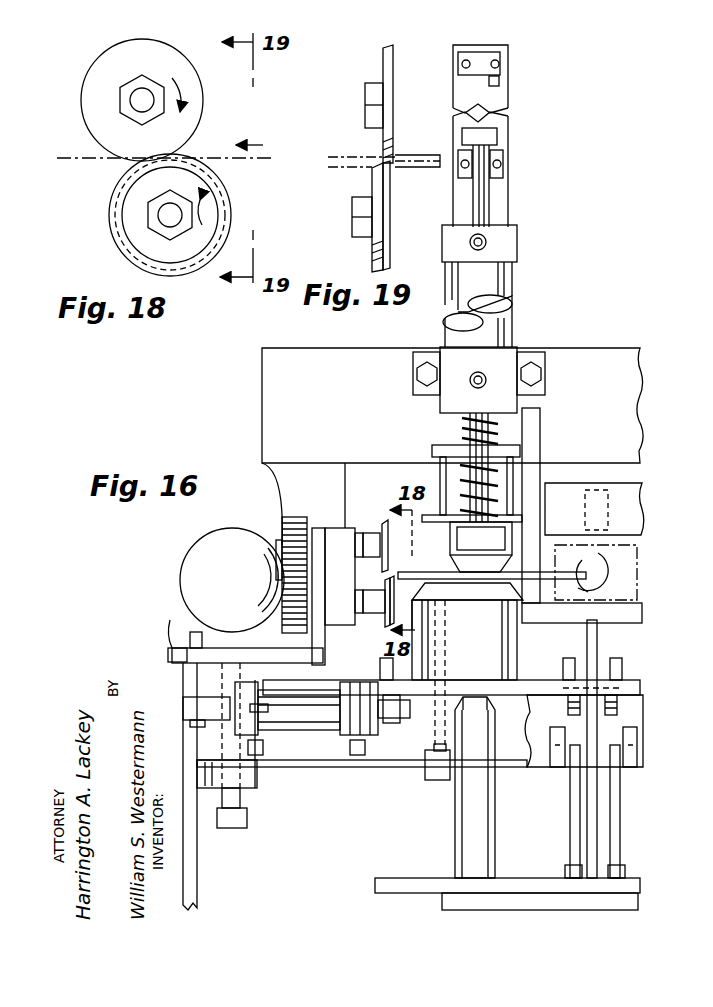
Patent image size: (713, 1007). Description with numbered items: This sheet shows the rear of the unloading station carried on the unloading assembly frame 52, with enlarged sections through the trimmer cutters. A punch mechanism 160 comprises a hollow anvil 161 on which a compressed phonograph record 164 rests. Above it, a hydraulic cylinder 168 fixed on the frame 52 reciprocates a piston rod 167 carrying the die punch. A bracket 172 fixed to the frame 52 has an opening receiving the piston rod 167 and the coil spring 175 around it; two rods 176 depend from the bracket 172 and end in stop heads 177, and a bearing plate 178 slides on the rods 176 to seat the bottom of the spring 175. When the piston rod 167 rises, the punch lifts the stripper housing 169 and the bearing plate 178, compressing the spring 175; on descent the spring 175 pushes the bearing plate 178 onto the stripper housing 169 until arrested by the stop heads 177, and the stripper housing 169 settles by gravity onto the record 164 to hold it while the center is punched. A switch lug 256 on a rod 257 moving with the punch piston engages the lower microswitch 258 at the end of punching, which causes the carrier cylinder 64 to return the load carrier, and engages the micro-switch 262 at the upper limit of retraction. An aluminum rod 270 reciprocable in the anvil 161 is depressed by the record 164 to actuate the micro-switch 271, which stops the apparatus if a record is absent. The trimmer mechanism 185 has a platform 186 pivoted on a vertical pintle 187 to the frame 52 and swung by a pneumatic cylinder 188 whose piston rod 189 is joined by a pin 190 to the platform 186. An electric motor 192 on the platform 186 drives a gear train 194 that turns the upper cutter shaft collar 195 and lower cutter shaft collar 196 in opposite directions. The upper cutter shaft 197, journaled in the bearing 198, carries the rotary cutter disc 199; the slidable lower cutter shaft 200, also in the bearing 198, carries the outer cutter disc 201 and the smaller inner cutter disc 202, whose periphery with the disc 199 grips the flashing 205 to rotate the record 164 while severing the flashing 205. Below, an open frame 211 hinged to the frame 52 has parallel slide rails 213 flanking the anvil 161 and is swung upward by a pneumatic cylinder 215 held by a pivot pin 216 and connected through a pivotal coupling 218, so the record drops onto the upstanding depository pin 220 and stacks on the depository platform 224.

In FIG. 16, the unloading assembly frame 52 is at (615, 404).
In FIG. 16, the pneumatic cylinder 64 is at (640, 550).
In FIG. 16, the punch mechanism 160 is at (543, 337).
In FIG. 16, the hollow anvil 161 is at (495, 644).
In FIG. 19, the compressed phonograph record 164 is at (356, 152).
In FIG. 16, the compressed phonograph record 164 is at (546, 548).
In FIG. 16, the piston rod 167 is at (480, 440).
In FIG. 16, the hydraulic cylinder 168 is at (500, 275).
In FIG. 16, the stripper housing 169 is at (498, 550).
In FIG. 16, the bracket 172 is at (434, 449).
In FIG. 16, the coil spring 175 is at (462, 430).
In FIG. 16, the rods 176 is at (515, 476).
In FIG. 16, the stop heads 177 is at (541, 500).
In FIG. 16, the bearing plate 178 is at (546, 496).
In FIG. 16, the trimmer mechanism 185 is at (158, 540).
In FIG. 16, the platform 186 is at (180, 652).
In FIG. 16, the vertical pintle 187 is at (247, 801).
In FIG. 16, the pneumatic cylinder 188 is at (325, 720).
In FIG. 16, the piston rod 189 is at (258, 714).
In FIG. 16, the pin 190 is at (186, 668).
In FIG. 16, the electric motor 192 is at (250, 598).
In FIG. 16, the gear train 194 is at (300, 518).
In FIG. 16, the upper cutter shaft collar 195 is at (292, 532).
In FIG. 16, the lower cutter shaft collar 196 is at (284, 578).
In FIG. 18, the upper cutter shaft 197 is at (135, 108).
In FIG. 16, the upper cutter shaft 197 is at (280, 548).
In FIG. 16, the bearing 198 is at (335, 530).
In FIG. 18, the rotary cutter disc 199 is at (150, 68).
In FIG. 19, the rotary cutter disc 199 is at (384, 55).
In FIG. 16, the rotary cutter disc 199 is at (383, 527).
In FIG. 18, the lower cutter shaft 200 is at (162, 215).
In FIG. 16, the lower cutter shaft 200 is at (398, 652).
In FIG. 18, the outer cutter disc 201 is at (136, 230).
In FIG. 19, the outer cutter disc 201 is at (374, 185).
In FIG. 16, the outer cutter disc 201 is at (392, 582).
In FIG. 18, the inner cutter disc 202 is at (130, 248).
In FIG. 19, the inner cutter disc 202 is at (388, 214).
In FIG. 16, the inner cutter disc 202 is at (388, 620).
In FIG. 18, the flashing 205 is at (72, 156).
In FIG. 19, the flashing 205 is at (420, 152).
In FIG. 16, the flashing 205 is at (576, 581).
In FIG. 16, the open frame 211 is at (640, 690).
In FIG. 16, the slide rails 213 is at (575, 658).
In FIG. 16, the pneumatic cylinder 215 is at (620, 822).
In FIG. 16, the pivot pin 216 is at (637, 776).
In FIG. 16, the pivotal coupling 218 is at (617, 707).
In FIG. 16, the depository pin 220 is at (460, 845).
In FIG. 16, the depository platform 224 is at (420, 886).
In FIG. 16, the switch lug 256 is at (497, 137).
In FIG. 16, the rod 257 is at (484, 208).
In FIG. 16, the lower microswitch 258 is at (503, 170).
In FIG. 16, the micro-switch 262 is at (499, 80).
In FIG. 16, the aluminum rod 270 is at (435, 723).
In FIG. 16, the micro-switch 271 is at (440, 782).